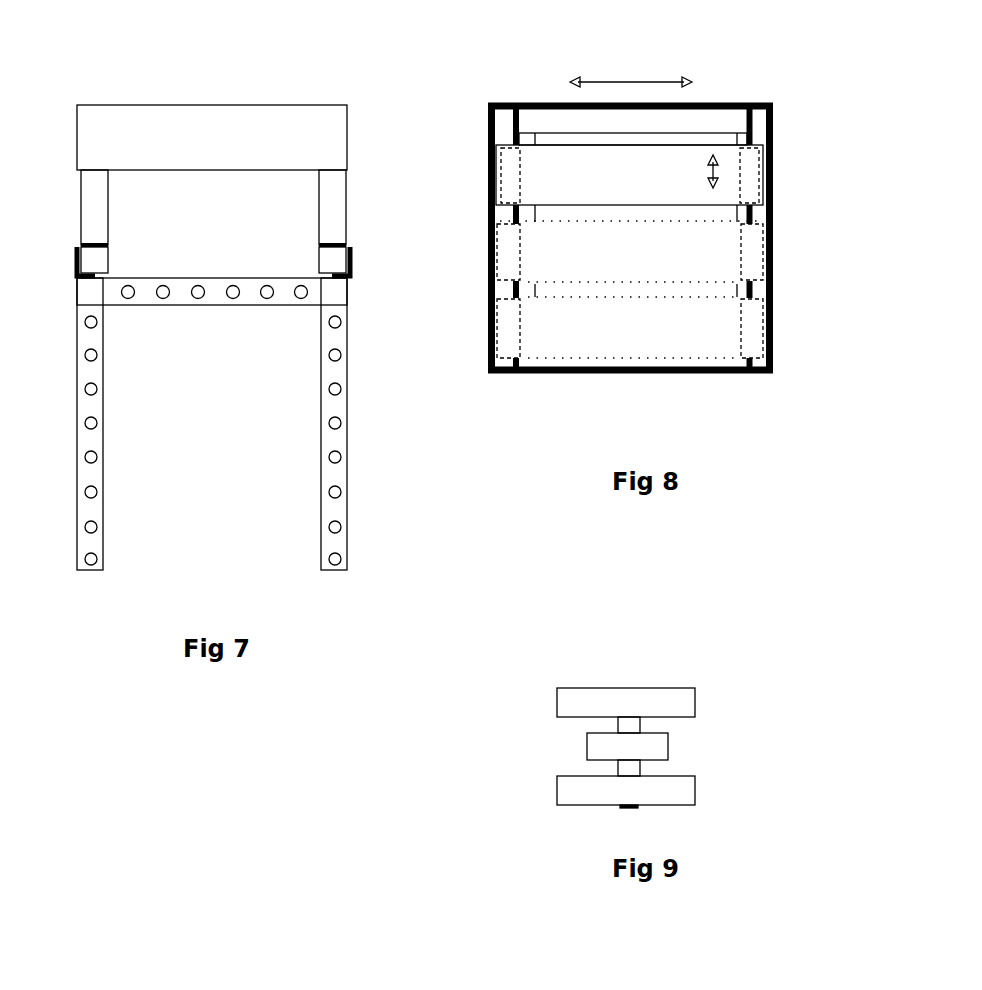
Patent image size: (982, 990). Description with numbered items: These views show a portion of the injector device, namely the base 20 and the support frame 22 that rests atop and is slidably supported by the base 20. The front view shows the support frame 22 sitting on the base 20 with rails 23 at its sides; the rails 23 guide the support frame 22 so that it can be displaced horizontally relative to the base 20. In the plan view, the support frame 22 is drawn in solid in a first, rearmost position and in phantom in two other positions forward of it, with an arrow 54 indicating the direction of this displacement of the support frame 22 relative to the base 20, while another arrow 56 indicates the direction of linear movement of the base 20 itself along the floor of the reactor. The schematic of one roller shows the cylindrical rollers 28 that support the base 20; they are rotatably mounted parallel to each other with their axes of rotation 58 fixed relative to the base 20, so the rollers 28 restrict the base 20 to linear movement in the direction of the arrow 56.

In FIG. 7, the base 20 is at (347, 367).
In FIG. 8, the base 20 is at (702, 373).
In FIG. 9, the base 20 is at (667, 688).
In FIG. 7, the support frame 22 is at (332, 118).
In FIG. 8, the support frame 22 is at (683, 168).
In FIG. 7, the rails 23 is at (74, 258).
In FIG. 8, the rails 23 is at (503, 103).
In FIG. 9, the rollers 28 is at (668, 747).
In FIG. 8, the arrow 54 is at (712, 168).
In FIG. 8, the arrow 56 is at (648, 80).
In FIG. 9, the axes of rotation 58 is at (617, 722).